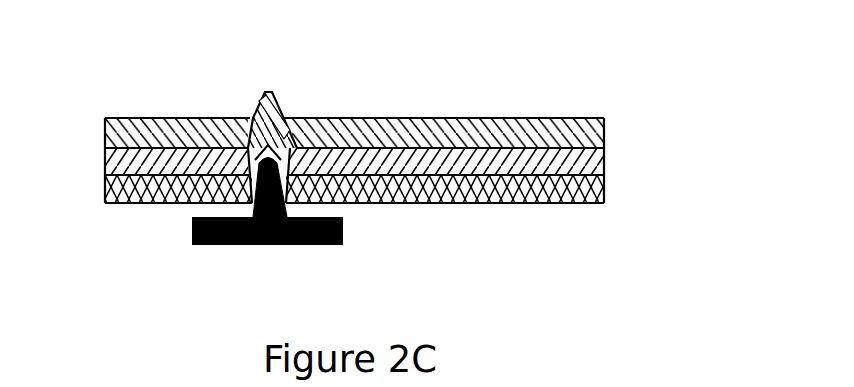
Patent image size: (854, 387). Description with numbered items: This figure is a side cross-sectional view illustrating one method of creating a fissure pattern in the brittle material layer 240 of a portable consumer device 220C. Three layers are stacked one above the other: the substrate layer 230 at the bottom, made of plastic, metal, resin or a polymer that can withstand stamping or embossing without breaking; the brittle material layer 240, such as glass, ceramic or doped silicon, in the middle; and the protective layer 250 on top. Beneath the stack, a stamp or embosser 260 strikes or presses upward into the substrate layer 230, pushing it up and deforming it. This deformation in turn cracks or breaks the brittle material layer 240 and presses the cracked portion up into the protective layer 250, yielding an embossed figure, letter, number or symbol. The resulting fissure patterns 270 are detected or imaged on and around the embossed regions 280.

The layered structure with plugged via 220C is at (431, 122).
The substrate layer 230 is at (605, 187).
The brittle material layer 240 is at (605, 157).
The protective layer 250 is at (605, 127).
The stamp or embosser 260 is at (192, 233).
The fissure patterns 270 is at (248, 118).
The embossed regions 280 is at (265, 90).